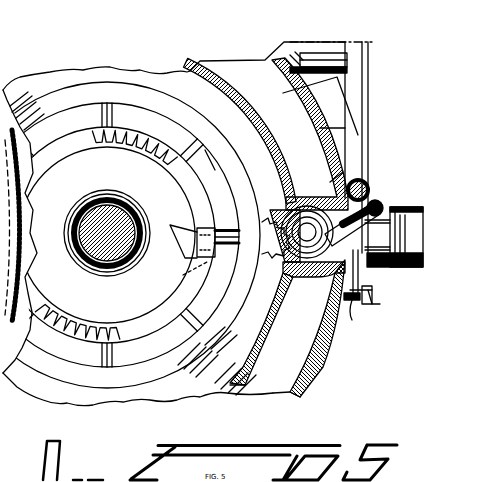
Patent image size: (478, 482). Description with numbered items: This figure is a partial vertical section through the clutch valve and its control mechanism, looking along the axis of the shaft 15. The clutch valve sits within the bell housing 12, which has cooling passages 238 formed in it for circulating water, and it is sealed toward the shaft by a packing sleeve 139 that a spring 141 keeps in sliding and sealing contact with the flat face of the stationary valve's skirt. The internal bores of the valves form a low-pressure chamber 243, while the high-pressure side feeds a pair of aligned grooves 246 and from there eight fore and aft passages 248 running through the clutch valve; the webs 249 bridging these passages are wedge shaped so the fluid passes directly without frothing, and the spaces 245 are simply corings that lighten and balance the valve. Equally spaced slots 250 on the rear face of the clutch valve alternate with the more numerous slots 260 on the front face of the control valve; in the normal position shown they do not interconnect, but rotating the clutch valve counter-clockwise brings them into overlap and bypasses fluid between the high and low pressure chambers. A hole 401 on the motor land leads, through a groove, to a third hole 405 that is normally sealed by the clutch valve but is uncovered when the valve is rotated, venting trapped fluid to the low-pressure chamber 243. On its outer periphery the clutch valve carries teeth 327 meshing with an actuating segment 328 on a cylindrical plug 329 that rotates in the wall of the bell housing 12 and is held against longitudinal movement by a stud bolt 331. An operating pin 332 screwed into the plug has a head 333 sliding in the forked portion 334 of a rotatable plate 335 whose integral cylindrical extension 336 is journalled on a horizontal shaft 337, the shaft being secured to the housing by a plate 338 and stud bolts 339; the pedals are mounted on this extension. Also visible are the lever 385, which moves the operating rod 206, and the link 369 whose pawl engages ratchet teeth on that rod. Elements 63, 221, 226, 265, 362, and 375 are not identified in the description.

The bell housing 12 is at (308, 378).
The shaft 15 is at (90, 248).
The housing wall 63 is at (22, 97).
The packing sleeve 139 is at (108, 200).
The spring 141 is at (144, 196).
The operating rod 206 is at (380, 165).
The housing wall 221 is at (258, 157).
The casing 226 is at (185, 130).
The cooling passages 238 is at (217, 361).
The low-pressure chamber 243 is at (140, 310).
The corings 245 is at (221, 171).
The grooves 246 is at (166, 150).
The fore and aft passages 248 is at (119, 235).
The webs 249 is at (198, 232).
The slots 250 is at (125, 137).
The slots 260 is at (118, 112).
The block 265 is at (199, 242).
The teeth 327 is at (239, 241).
The actuating segment 328 is at (239, 241).
The cylindrical plug 329 is at (320, 180).
The stud bolt 331 is at (375, 219).
The operating pin 332 is at (366, 268).
The operating head 333 is at (394, 223).
The forked portion 334 is at (366, 182).
The rotatable plate 335 is at (372, 284).
The cylindrical extension 336 is at (413, 234).
The horizontal shaft 337 is at (307, 232).
The plate 338 is at (372, 300).
The stud bolts 339 is at (355, 321).
The cap plate 362 is at (317, 52).
The link 369 is at (380, 142).
The ratchet wheel 375 is at (280, 205).
The lever 385 is at (358, 97).
The hole 401 is at (15, 226).
The third hole 405 is at (205, 268).